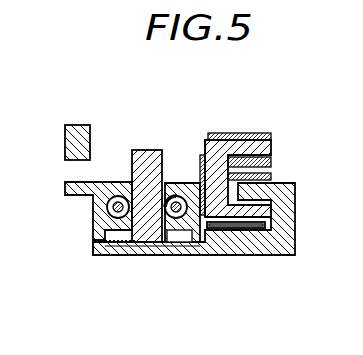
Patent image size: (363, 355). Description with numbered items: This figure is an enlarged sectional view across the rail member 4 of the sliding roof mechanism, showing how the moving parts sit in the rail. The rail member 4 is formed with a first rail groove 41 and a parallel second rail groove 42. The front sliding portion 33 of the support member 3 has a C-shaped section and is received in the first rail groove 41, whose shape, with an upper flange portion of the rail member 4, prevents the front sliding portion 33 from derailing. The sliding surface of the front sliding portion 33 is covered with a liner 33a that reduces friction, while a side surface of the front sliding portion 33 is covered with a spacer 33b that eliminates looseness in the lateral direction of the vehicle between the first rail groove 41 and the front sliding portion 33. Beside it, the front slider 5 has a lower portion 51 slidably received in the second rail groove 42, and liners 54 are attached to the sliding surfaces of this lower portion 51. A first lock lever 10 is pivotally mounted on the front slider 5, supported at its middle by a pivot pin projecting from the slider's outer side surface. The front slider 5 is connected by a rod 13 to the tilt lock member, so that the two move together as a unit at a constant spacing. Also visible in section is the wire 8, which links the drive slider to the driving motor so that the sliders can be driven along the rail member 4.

The support member 3 is at (204, 140).
The rail member 4 is at (295, 198).
The front slider 5 is at (140, 147).
The wire 8 is at (109, 210).
The first lock lever 10 is at (85, 125).
The rod 13 is at (177, 244).
The front sliding portion 33 is at (254, 130).
The liner 33a is at (272, 163).
The spacer 33b is at (200, 178).
The first rail groove 41 is at (243, 230).
The second rail groove 42 is at (150, 256).
The lower portion 51 is at (128, 253).
The liners 54 is at (93, 252).